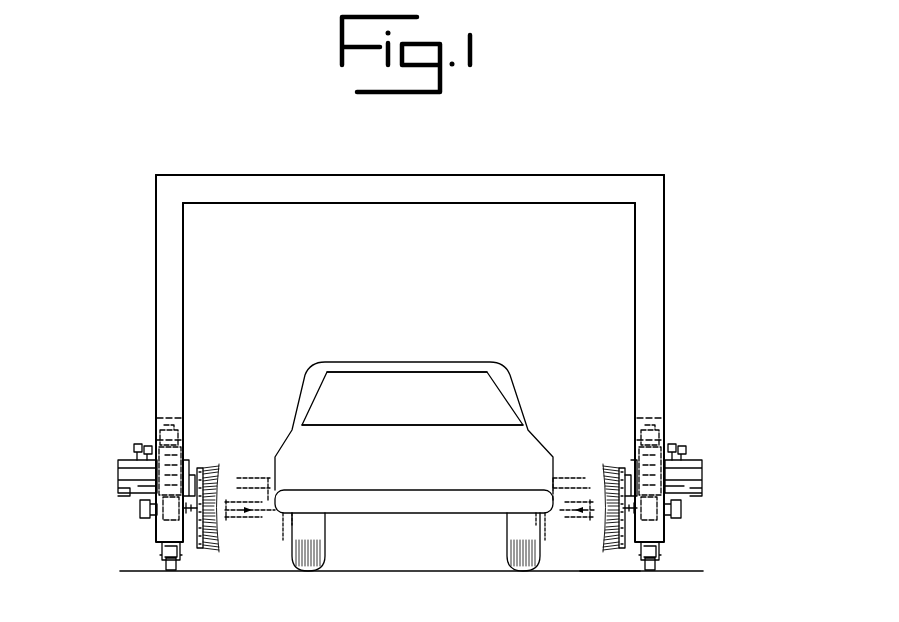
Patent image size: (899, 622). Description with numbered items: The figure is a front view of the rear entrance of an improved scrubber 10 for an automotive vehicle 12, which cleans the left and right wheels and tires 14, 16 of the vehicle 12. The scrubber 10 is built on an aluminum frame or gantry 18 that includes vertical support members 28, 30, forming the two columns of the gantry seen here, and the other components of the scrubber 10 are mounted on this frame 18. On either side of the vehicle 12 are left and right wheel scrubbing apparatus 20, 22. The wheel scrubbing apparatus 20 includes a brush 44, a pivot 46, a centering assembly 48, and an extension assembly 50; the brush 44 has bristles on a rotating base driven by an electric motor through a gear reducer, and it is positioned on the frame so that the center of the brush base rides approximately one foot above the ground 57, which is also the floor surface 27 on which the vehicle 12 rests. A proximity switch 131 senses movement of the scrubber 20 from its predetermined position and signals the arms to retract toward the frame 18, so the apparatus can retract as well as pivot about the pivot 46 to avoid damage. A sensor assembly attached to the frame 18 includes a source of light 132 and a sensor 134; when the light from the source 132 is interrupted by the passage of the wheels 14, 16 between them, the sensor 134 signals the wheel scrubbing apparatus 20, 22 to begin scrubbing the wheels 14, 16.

The scrubber 10 is at (697, 74).
The automotive vehicle 12 is at (403, 500).
The left wheel 14 is at (312, 573).
The right wheel 16 is at (523, 573).
The frame 18 is at (690, 241).
The left wheel scrubbing apparatus 20 is at (142, 530).
The right wheel scrubbing apparatus 22 is at (705, 513).
The floor surface 27 is at (722, 579).
The vertical support member 28 is at (166, 360).
The vertical support member 30 is at (660, 346).
The brush 44 is at (210, 553).
The pivot 46 is at (188, 436).
The centering assembly 48 is at (130, 436).
The extension assembly 50 is at (106, 480).
The ground 57 is at (603, 573).
The proximity switch 131 is at (668, 425).
The source of light 132 is at (170, 575).
The sensor 134 is at (657, 575).